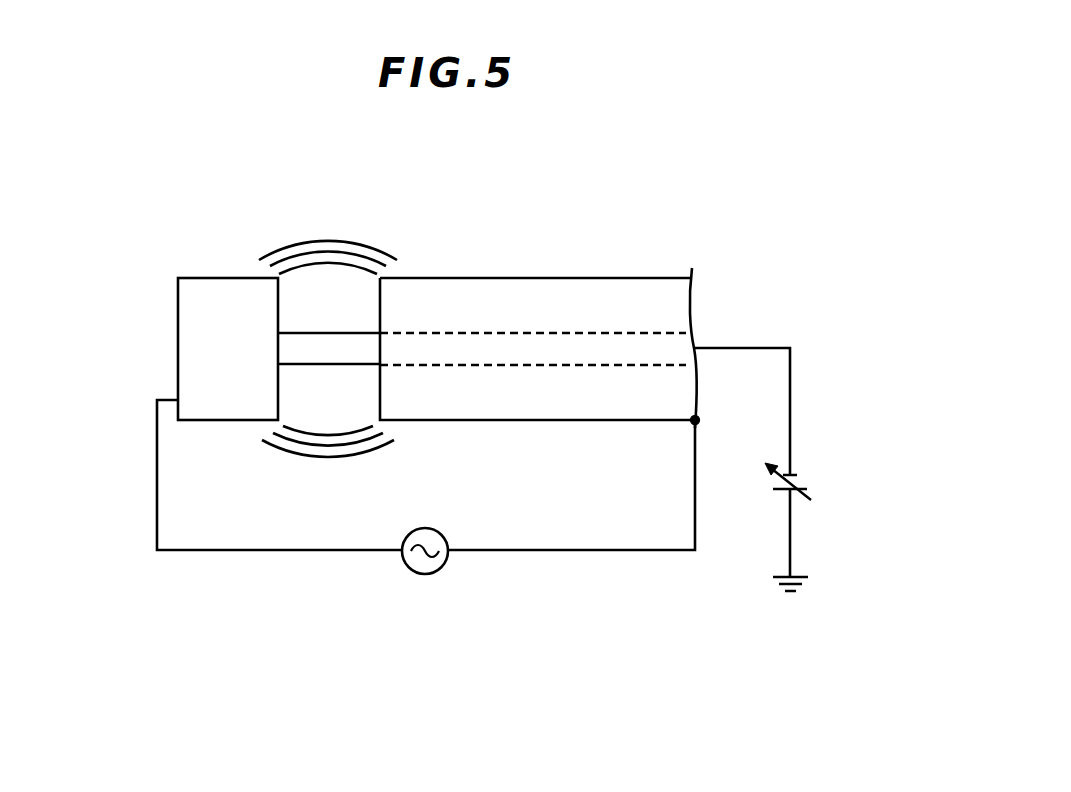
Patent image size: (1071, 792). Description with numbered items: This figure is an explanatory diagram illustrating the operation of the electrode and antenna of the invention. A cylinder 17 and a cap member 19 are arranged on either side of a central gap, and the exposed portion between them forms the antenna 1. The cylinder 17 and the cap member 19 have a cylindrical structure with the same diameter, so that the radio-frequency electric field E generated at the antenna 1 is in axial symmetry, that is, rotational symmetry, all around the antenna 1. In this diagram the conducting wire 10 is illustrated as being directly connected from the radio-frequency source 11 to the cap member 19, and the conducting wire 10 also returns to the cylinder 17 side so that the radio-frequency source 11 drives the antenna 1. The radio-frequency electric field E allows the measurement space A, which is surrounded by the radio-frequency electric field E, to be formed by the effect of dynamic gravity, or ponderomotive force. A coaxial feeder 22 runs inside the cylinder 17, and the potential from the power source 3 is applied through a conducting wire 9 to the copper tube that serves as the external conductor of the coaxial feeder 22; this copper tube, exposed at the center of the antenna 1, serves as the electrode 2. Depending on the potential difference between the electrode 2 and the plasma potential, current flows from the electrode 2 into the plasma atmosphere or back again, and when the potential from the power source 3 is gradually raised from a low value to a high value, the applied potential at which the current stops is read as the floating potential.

The antenna 1 is at (363, 272).
The electrode 2 is at (300, 333).
The power source 3 is at (808, 478).
The conducting wire 9 is at (757, 347).
The conducting wire 10 is at (258, 551).
The radio-frequency source 11 is at (408, 570).
The cylinder 17 is at (523, 279).
The cap member 19 is at (178, 316).
The coaxial feeder 22 is at (624, 334).
The measurement space A is at (326, 265).
The radio-frequency electric field E is at (275, 474).